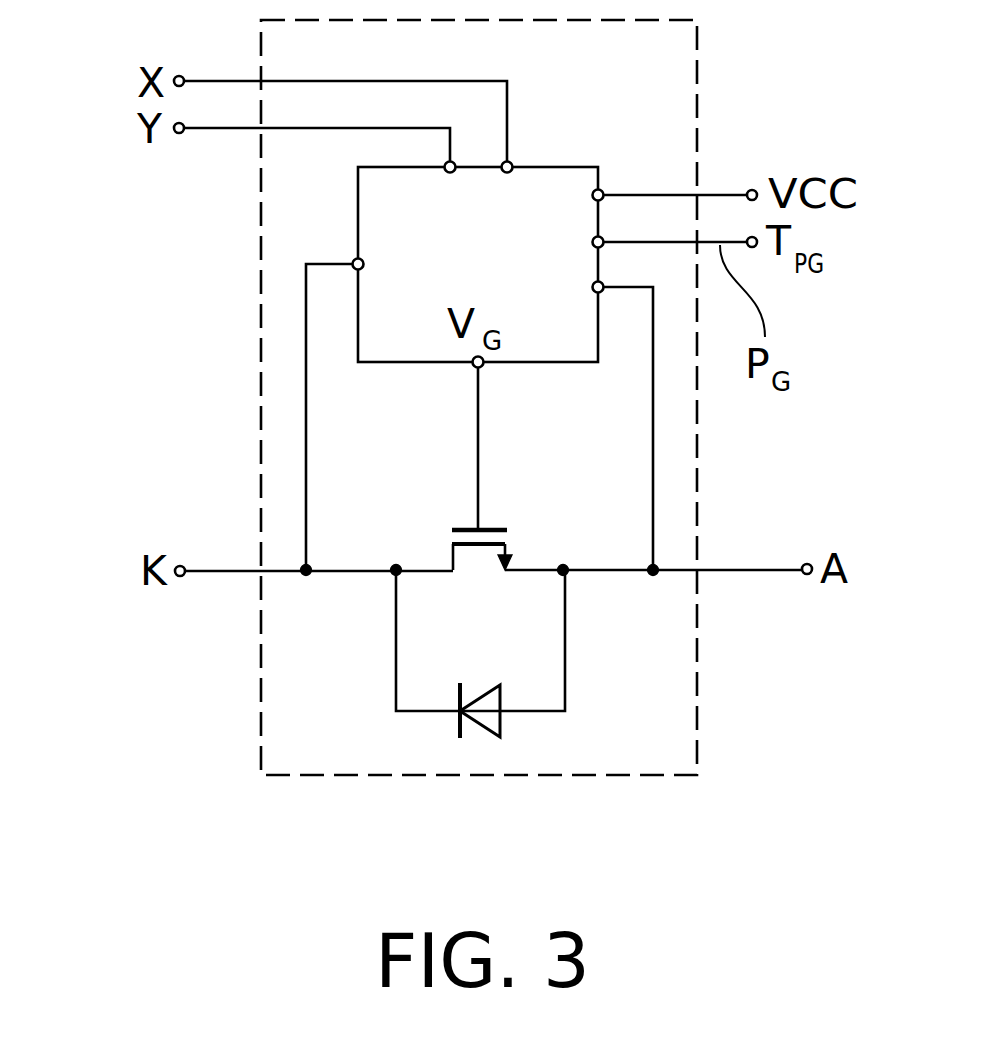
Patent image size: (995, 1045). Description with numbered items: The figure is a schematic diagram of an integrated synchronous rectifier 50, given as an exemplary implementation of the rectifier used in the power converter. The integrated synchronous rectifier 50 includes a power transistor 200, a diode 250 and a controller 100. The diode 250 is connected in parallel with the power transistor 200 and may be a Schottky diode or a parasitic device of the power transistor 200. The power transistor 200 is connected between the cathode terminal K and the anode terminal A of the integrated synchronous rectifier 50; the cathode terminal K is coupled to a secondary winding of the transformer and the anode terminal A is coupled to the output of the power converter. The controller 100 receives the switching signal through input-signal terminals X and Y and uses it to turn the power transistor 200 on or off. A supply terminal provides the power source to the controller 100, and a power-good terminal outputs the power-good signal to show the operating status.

The integrated synchronous rectifier 50 is at (697, 53).
The controller 100 is at (413, 337).
The power transistor 200 is at (492, 527).
The diode 250 is at (478, 690).